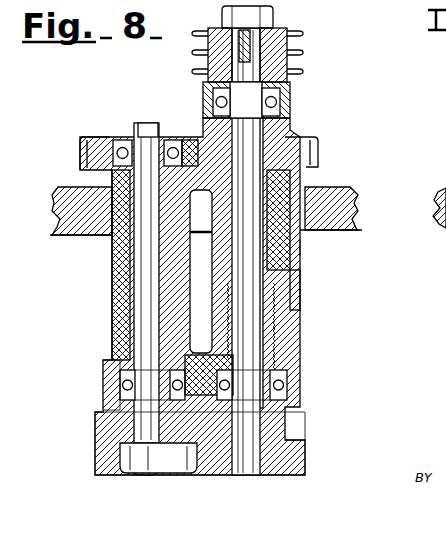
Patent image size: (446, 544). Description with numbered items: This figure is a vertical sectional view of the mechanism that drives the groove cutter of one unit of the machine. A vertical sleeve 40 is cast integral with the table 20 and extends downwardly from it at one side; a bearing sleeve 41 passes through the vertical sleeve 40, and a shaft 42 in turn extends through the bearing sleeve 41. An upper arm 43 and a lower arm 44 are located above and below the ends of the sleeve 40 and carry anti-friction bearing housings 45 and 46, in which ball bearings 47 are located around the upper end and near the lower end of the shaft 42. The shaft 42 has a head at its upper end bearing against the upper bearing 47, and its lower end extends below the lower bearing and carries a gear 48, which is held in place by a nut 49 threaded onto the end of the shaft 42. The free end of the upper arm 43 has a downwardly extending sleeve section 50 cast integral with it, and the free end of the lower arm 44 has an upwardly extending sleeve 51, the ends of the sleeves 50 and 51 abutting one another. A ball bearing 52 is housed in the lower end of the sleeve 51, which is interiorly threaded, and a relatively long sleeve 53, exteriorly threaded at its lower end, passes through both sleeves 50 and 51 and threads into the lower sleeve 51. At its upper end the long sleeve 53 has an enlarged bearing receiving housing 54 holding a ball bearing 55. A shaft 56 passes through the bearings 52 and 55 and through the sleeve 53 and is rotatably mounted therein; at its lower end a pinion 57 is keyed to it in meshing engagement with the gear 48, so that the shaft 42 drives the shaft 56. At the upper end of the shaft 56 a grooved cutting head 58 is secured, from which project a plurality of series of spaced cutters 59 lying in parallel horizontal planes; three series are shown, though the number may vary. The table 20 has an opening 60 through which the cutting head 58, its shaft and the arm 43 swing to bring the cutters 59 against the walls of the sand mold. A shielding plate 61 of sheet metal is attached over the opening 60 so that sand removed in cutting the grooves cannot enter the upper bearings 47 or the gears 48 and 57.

The table 20 is at (62, 236).
The vertical sleeve 40 is at (118, 297).
The bearing sleeve 41 is at (120, 250).
The shaft 42 is at (143, 313).
The upper arm 43 is at (196, 150).
The lower arm 44 is at (200, 372).
The upper anti-friction bearing housing 45 is at (107, 150).
The lower anti-friction bearing housing 46 is at (108, 380).
The ball bearings 47 is at (121, 150).
The gear 48 is at (104, 440).
The nut 49 is at (150, 458).
The sleeve section 50 is at (300, 250).
The sleeve 51 is at (290, 290).
The ball bearing 52 is at (288, 385).
The long sleeve 53 is at (284, 257).
The bearing receiving housing 54 is at (292, 118).
The ball bearing 55 is at (286, 100).
The shaft 56 is at (320, 140).
The pinion 57 is at (284, 446).
The grooved cutting head 58 is at (275, 24).
The cutters 59 is at (304, 72).
The opening 60 is at (352, 228).
The shielding plate 61 is at (255, 153).